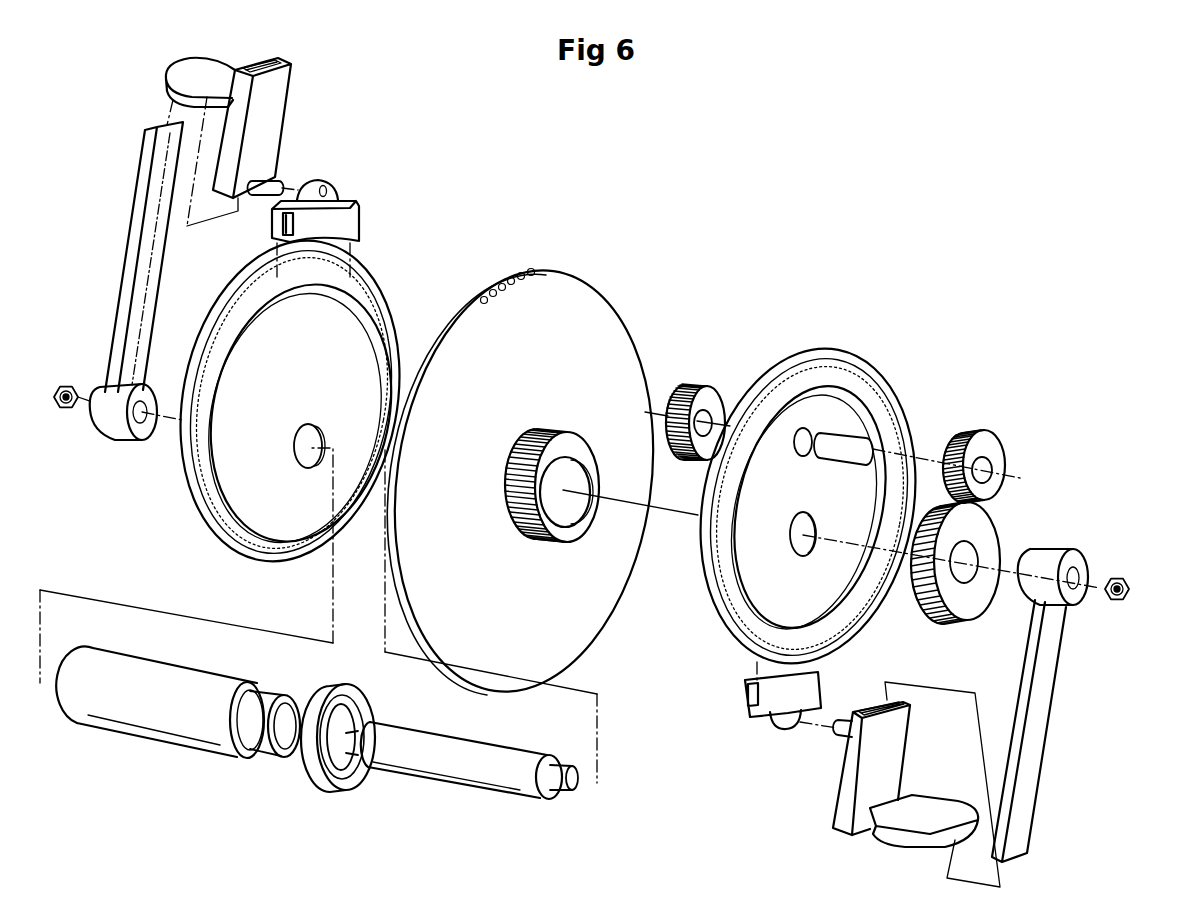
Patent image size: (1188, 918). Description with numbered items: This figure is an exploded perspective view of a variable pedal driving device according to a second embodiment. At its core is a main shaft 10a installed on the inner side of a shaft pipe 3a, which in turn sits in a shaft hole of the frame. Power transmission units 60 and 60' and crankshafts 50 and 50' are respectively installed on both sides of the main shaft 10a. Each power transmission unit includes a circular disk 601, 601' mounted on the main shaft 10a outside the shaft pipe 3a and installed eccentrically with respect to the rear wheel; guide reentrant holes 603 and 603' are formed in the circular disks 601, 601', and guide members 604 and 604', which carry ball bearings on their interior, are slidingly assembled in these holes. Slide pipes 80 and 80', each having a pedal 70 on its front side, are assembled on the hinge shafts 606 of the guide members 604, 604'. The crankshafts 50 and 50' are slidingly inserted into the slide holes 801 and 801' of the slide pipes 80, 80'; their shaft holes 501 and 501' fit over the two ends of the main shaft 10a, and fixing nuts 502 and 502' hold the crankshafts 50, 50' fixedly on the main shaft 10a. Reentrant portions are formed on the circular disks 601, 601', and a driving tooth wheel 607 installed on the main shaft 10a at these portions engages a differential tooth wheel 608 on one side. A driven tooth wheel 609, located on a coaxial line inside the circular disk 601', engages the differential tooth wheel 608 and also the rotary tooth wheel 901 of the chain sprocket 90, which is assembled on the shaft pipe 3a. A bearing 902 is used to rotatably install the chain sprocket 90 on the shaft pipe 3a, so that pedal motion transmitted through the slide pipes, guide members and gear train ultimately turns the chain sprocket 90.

The pedal 70 is at (218, 70).
The slide pipe 80 is at (277, 128).
The slide hole 801 is at (299, 64).
The hinge shaft 606 is at (262, 194).
The guide member 604 is at (344, 210).
The power transmission unit 60 is at (430, 230).
The guide reentrant hole 603 is at (286, 401).
The circular disk 601 is at (300, 425).
The crankshaft 50 is at (134, 257).
The shaft hole 501 is at (123, 436).
The fixing nut 502 is at (70, 367).
The chain sprocket 90 is at (588, 307).
The rotary tooth wheel 901 is at (572, 440).
The driven tooth wheel 609 is at (693, 386).
The guide reentrant hole 603' is at (808, 492).
The circular disk 601' is at (809, 468).
The power transmission unit 60' is at (968, 346).
The differential tooth wheel 608 is at (988, 447).
The driving tooth wheel 607 is at (988, 537).
The shaft hole 501' is at (1075, 554).
The fixing nut 502' is at (1139, 619).
The crankshaft 50' is at (1053, 731).
The slide pipe 80' is at (900, 768).
The slide hole 801' is at (910, 684).
The guide member 604' is at (776, 719).
The shaft pipe 3a is at (147, 738).
The bearing 902 is at (314, 772).
The main shaft 10a is at (430, 763).